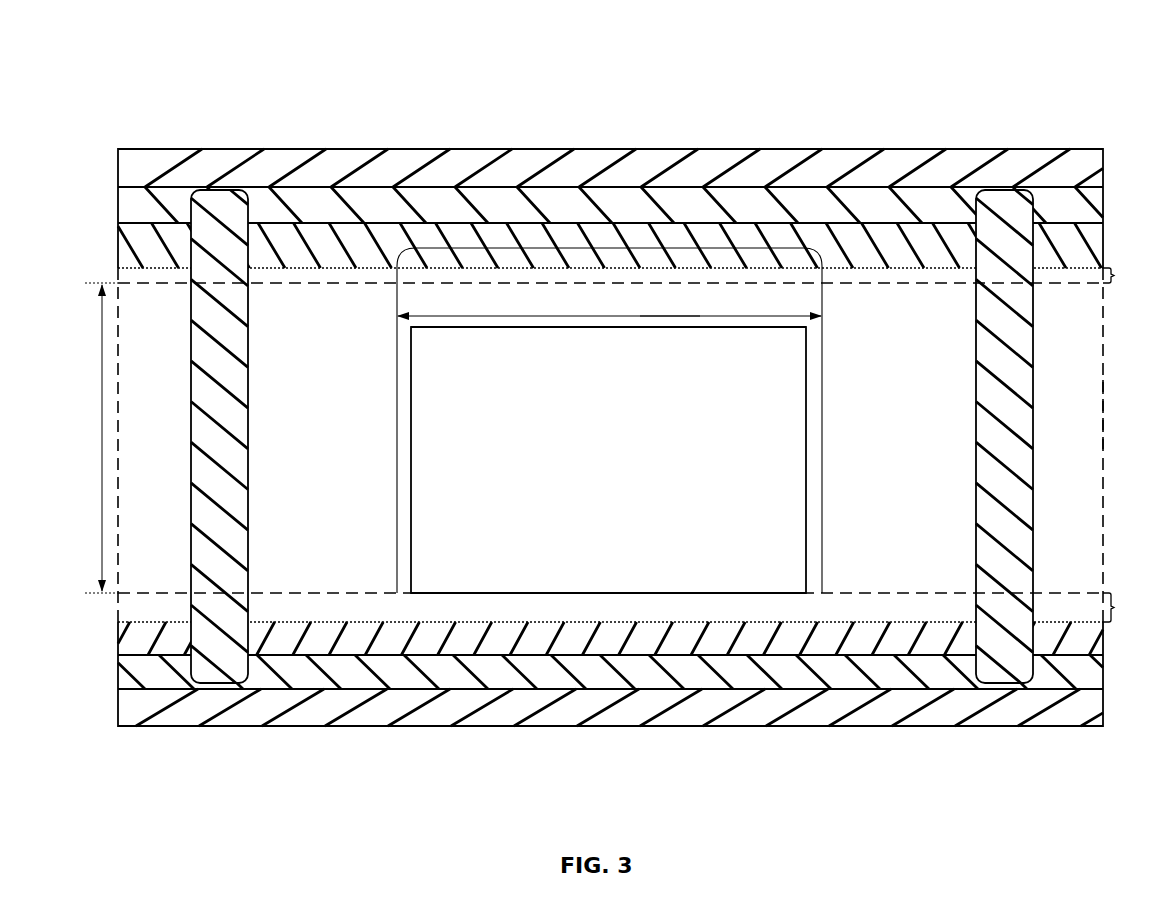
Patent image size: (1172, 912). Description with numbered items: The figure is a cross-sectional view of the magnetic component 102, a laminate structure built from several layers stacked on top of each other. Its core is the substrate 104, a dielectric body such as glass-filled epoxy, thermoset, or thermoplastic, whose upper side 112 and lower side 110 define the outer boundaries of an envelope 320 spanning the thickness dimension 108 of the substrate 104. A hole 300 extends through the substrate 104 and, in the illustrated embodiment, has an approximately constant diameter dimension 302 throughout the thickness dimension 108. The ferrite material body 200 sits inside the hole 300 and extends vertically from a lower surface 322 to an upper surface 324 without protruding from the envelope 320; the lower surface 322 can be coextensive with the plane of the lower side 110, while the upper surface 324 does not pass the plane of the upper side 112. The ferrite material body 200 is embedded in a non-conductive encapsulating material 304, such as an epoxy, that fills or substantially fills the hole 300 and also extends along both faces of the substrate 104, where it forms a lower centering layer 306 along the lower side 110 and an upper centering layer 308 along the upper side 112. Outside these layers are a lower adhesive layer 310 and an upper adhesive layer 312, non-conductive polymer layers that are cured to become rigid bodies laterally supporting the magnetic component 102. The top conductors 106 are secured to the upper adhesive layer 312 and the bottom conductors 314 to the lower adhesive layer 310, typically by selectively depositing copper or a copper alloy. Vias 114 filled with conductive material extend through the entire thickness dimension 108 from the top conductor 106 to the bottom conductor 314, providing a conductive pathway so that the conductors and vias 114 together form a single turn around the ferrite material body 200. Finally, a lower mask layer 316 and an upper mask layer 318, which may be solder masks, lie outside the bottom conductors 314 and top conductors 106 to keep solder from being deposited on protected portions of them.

The magnetic component 102 is at (1074, 88).
The substrate 104 is at (1090, 353).
The top conductors 106 is at (946, 206).
The thickness dimension 108 is at (73, 438).
The lower side 110 is at (1071, 602).
The upper side 112 is at (1076, 256).
The vias 114 is at (237, 350).
The ferrite material body 200 is at (608, 460).
The hole 300 is at (627, 247).
The diameter dimension 302 is at (664, 312).
The encapsulating material 304 is at (609, 301).
The lower centering layer 306 is at (1131, 607).
The upper centering layer 308 is at (1131, 277).
The lower adhesive layer 310 is at (134, 648).
The upper adhesive layer 312 is at (130, 243).
The bottom conductors 314 is at (917, 678).
The lower mask layer 316 is at (1075, 715).
The upper mask layer 318 is at (1086, 158).
The envelope 320 is at (1104, 418).
The lower surface 322 is at (572, 600).
The upper surface 324 is at (446, 322).